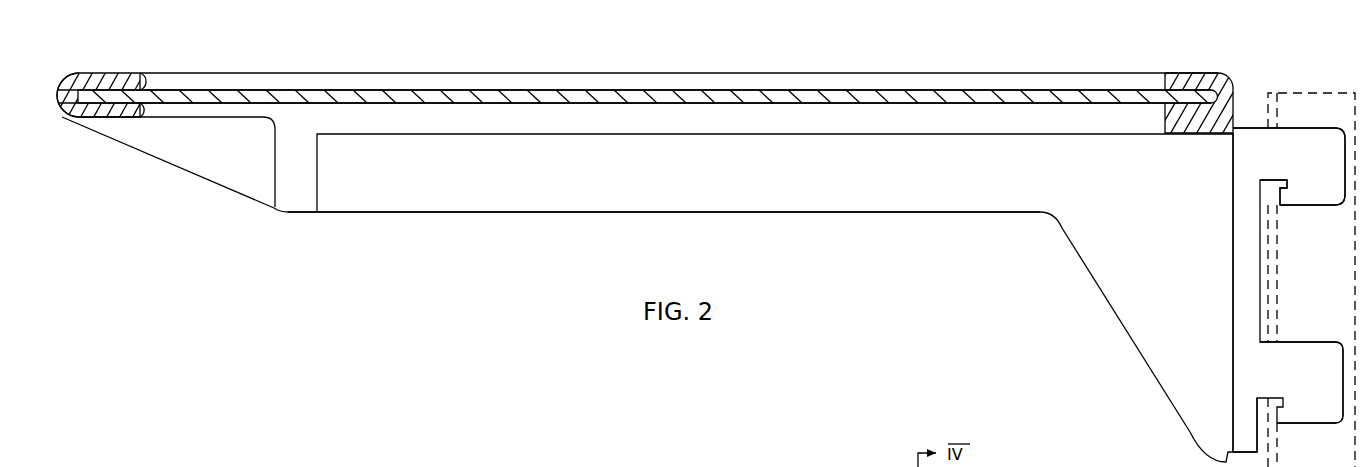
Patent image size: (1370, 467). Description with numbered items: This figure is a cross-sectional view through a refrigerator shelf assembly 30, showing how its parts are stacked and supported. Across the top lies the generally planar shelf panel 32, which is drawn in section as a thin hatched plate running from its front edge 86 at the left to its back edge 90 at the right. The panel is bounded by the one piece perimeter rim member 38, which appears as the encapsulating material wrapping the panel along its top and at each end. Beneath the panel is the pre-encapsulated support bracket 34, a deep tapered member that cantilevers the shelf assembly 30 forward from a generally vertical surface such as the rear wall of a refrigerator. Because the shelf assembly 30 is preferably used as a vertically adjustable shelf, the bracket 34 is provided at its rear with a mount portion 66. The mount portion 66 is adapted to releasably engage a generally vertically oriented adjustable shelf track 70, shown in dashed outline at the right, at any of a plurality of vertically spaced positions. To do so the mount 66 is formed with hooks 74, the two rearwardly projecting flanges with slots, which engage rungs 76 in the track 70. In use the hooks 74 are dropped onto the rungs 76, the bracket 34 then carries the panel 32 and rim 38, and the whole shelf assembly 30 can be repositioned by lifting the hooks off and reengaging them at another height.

The shelf assembly 30 is at (532, 266).
The shelf panel 32 is at (605, 100).
The support bracket 34 is at (937, 213).
The perimeter rim member 38 is at (322, 78).
The mount portion 66 is at (1242, 268).
The adjustable shelf track 70 is at (1314, 103).
The hooks 74 is at (1312, 362).
The rungs 76 is at (1273, 308).
The front edge 86 is at (62, 118).
The back edge 90 is at (1233, 88).